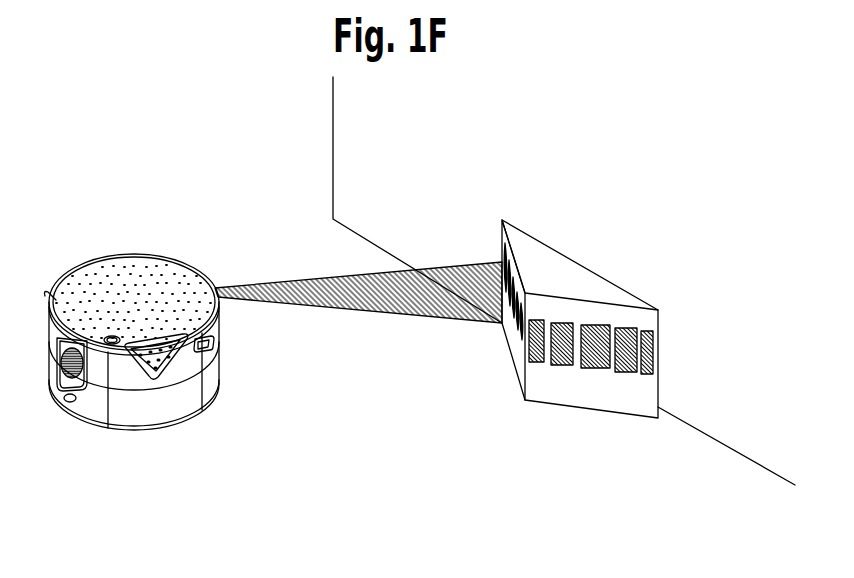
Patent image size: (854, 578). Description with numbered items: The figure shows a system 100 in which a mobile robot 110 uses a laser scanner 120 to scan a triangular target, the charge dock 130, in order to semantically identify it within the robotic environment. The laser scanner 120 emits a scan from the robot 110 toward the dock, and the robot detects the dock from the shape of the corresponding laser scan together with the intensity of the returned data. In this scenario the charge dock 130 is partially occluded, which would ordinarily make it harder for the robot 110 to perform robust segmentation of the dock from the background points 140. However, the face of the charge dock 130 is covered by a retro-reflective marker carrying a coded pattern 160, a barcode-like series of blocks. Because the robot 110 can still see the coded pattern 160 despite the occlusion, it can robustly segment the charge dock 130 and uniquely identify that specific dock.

The system 100 is at (384, 416).
The mobile robot 110 is at (185, 415).
The laser scanner 120 is at (217, 288).
The charge dock 130 is at (552, 408).
The background points 140 is at (532, 140).
The coded pattern 160 is at (655, 346).